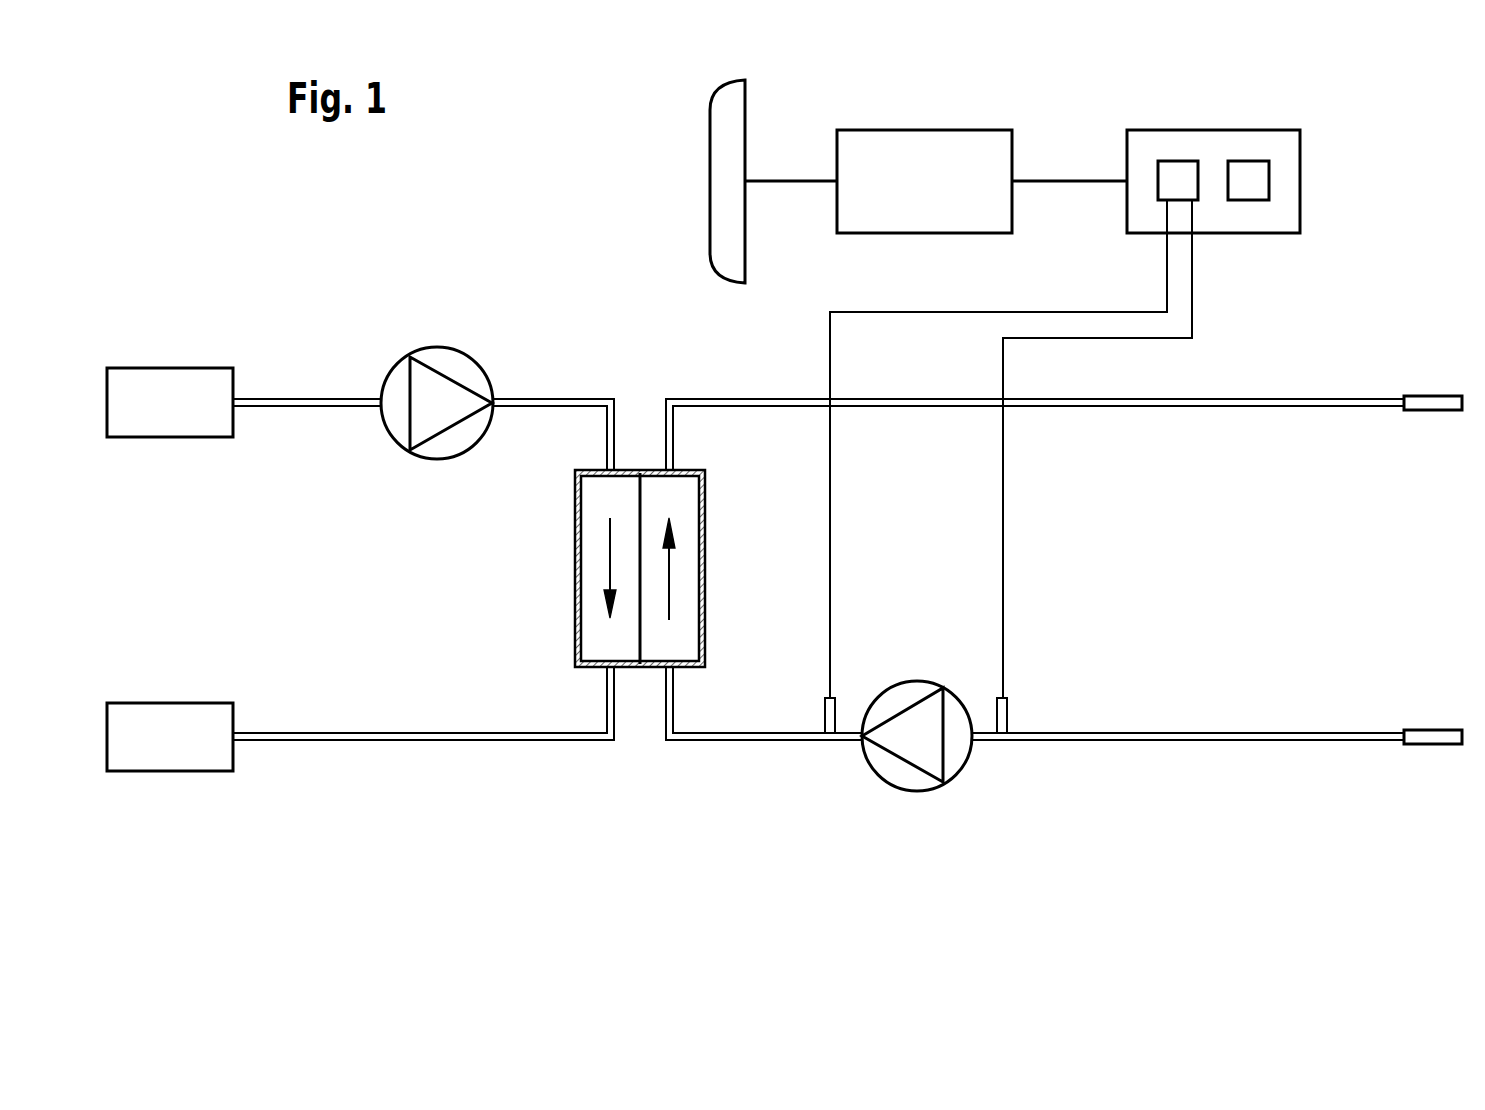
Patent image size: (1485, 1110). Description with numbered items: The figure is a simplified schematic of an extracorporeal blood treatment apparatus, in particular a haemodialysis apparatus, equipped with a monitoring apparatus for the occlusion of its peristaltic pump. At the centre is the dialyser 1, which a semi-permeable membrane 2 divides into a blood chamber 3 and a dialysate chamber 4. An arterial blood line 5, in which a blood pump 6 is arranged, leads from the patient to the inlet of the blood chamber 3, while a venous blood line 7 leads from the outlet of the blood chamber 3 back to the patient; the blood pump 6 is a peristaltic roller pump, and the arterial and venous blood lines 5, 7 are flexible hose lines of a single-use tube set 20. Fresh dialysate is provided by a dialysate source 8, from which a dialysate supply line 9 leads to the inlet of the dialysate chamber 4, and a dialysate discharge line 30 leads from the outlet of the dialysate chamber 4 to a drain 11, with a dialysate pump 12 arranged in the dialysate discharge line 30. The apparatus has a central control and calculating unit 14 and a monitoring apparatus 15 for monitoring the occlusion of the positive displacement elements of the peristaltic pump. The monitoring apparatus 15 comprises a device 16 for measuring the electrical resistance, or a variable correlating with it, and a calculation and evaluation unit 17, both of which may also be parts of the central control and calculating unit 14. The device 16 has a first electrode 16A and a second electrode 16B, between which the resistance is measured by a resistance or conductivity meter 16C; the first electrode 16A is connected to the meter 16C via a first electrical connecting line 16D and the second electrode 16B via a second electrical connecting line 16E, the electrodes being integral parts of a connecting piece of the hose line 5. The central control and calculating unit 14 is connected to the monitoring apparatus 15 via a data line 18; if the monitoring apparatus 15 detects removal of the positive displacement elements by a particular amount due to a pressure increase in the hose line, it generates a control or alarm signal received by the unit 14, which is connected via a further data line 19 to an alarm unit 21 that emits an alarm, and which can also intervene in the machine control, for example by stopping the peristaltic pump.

The dialyser 1 is at (619, 568).
The semi-permeable membrane 2 is at (642, 505).
The blood chamber 3 is at (690, 625).
The dialysate chamber 4 is at (597, 625).
The arterial blood line 5 is at (1262, 733).
The blood pump 6 is at (917, 792).
The venous blood line 7 is at (1262, 398).
The dialysate source 8 is at (170, 395).
The dialysate supply line 9 is at (553, 397).
The drain 11 is at (170, 730).
The dialysate pump 12 is at (437, 348).
The central control and calculating unit 14 is at (922, 130).
The monitoring apparatus 15 is at (1175, 128).
The device for measuring the electrical resistance 16 is at (1126, 133).
The first electrode 16A is at (1007, 718).
The second electrode 16B is at (825, 718).
The resistance or conductivity meter 16C is at (1176, 177).
The first electrical connecting line 16D is at (1003, 503).
The second electrical connecting line 16E is at (830, 503).
The calculation and evaluation unit 17 is at (1246, 180).
The data line 18 is at (1069, 185).
The data line 19 is at (793, 180).
The tube set 20 is at (784, 463).
The alarm unit 21 is at (720, 181).
The dialysate discharge line 30 is at (367, 732).